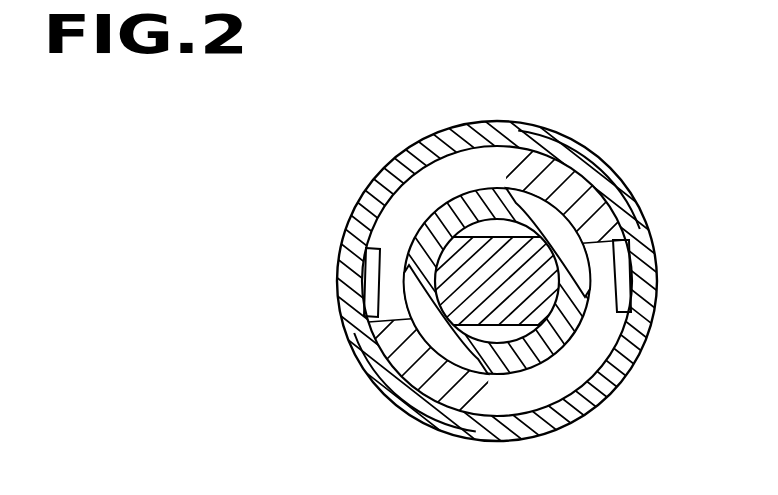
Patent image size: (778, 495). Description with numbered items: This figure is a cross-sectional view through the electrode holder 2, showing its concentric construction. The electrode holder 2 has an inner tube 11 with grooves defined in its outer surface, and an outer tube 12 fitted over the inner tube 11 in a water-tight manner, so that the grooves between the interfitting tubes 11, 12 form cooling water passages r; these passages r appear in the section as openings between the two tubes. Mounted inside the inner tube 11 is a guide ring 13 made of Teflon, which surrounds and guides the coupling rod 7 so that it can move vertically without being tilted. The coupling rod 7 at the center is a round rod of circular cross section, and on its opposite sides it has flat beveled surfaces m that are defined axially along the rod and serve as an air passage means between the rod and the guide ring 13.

The electrode holder 2 is at (378, 181).
The coupling rod 7 is at (458, 260).
The inner tube 11 is at (563, 185).
The outer tube 12 is at (607, 182).
The guide ring 13 is at (617, 250).
The flat beveled surfaces m is at (497, 235).
The cooling water passages r is at (342, 283).